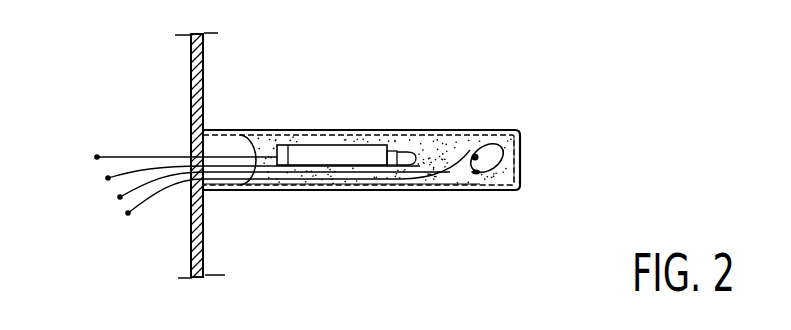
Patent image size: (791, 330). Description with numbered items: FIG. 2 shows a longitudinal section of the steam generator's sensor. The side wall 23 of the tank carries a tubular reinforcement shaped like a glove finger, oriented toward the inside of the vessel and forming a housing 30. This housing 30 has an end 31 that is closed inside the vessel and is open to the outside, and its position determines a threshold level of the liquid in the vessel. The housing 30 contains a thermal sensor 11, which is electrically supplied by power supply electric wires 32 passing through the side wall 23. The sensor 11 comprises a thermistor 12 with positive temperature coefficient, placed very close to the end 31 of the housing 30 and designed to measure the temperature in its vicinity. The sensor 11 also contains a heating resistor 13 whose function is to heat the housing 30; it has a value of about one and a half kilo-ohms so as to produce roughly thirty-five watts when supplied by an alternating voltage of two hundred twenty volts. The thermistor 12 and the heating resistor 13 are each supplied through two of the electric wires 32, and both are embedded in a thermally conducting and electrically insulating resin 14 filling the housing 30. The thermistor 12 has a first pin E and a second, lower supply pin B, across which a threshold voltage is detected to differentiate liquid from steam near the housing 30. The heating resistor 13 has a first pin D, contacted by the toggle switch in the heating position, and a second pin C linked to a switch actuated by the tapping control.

The thermal sensor 11 is at (368, 192).
The thermistor 12 is at (492, 146).
The heating resistor 13 is at (318, 132).
The resin 14 is at (442, 140).
The side wall 23 is at (205, 78).
The housing 30 is at (385, 130).
The end 31 is at (522, 155).
The power supply electric wires 32 is at (130, 141).
The lower supply pin B is at (128, 214).
The second pin C is at (96, 157).
The first pin D is at (107, 178).
The first pin E is at (120, 198).